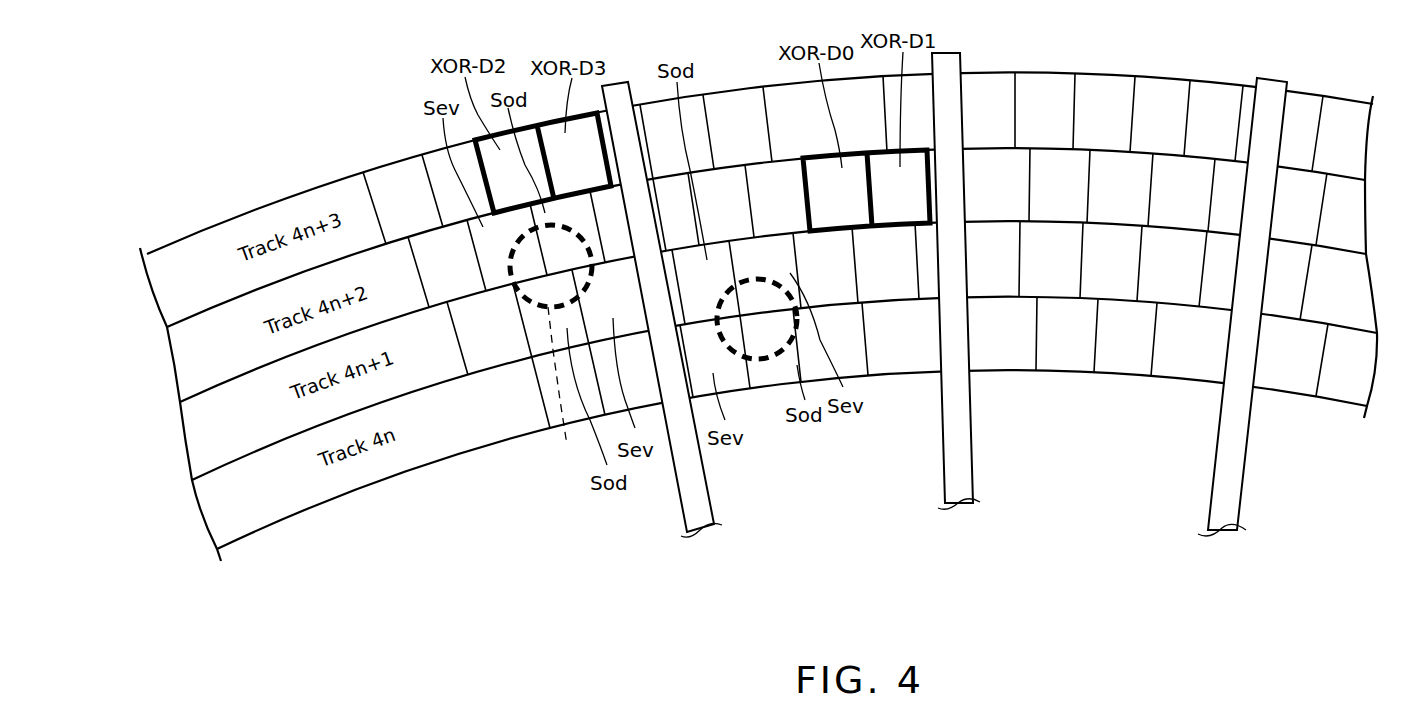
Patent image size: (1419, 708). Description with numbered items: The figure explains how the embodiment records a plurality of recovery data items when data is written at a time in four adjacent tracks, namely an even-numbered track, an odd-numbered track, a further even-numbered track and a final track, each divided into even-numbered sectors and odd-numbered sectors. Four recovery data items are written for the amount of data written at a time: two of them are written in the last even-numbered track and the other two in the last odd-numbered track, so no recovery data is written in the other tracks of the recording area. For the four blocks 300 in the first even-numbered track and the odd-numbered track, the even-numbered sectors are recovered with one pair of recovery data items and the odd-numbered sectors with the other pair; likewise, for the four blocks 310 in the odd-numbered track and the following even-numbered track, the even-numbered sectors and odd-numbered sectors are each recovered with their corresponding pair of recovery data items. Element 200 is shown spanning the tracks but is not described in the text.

The magnetic head 200 is at (702, 518).
The blocks 300 is at (765, 360).
The blocks 310 is at (551, 352).